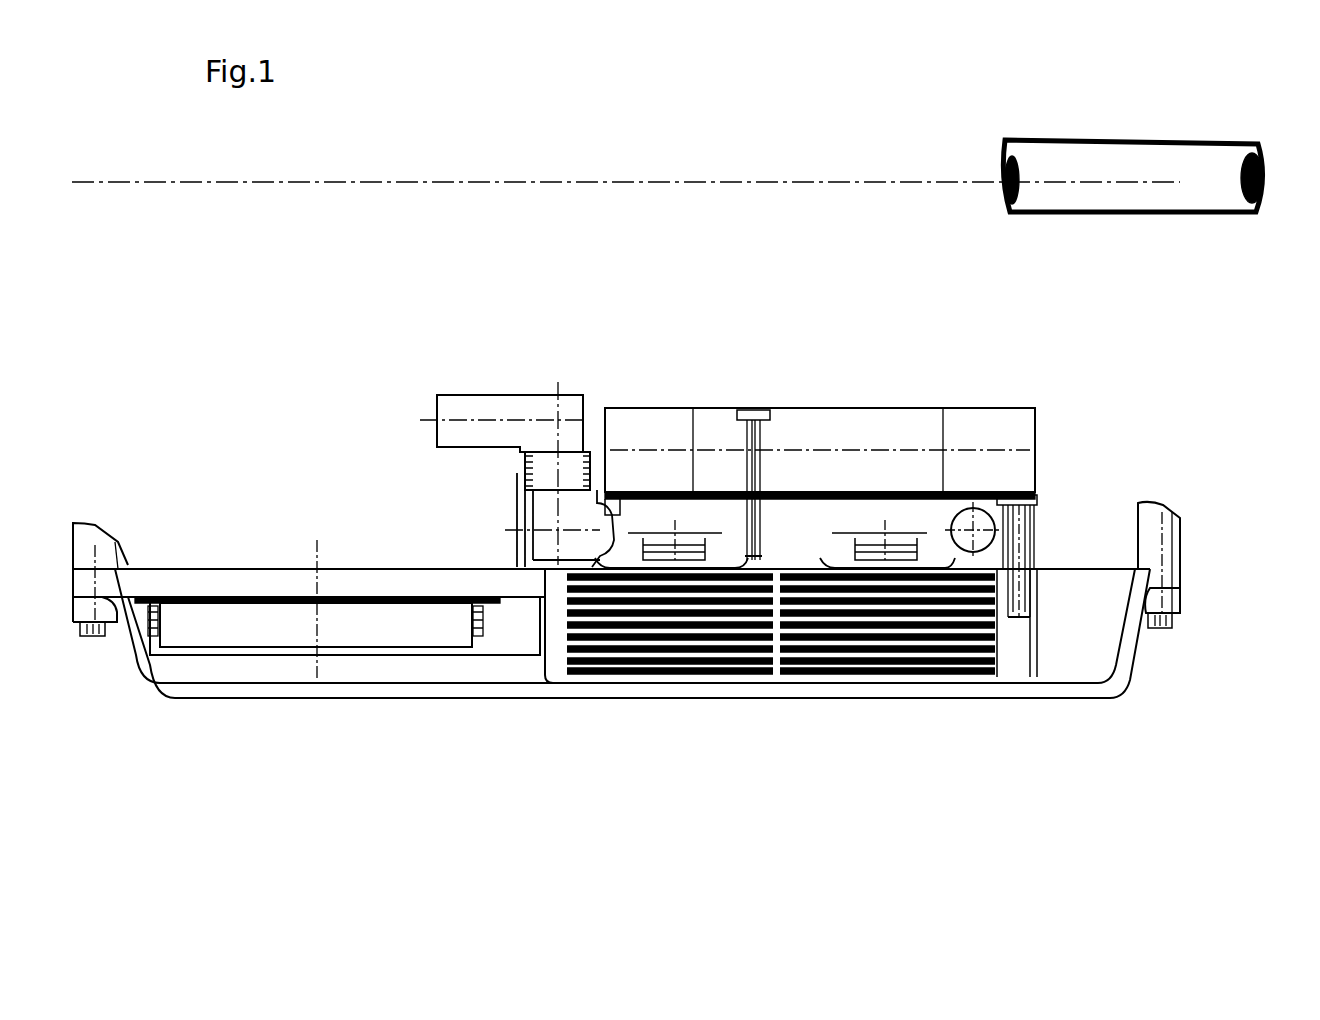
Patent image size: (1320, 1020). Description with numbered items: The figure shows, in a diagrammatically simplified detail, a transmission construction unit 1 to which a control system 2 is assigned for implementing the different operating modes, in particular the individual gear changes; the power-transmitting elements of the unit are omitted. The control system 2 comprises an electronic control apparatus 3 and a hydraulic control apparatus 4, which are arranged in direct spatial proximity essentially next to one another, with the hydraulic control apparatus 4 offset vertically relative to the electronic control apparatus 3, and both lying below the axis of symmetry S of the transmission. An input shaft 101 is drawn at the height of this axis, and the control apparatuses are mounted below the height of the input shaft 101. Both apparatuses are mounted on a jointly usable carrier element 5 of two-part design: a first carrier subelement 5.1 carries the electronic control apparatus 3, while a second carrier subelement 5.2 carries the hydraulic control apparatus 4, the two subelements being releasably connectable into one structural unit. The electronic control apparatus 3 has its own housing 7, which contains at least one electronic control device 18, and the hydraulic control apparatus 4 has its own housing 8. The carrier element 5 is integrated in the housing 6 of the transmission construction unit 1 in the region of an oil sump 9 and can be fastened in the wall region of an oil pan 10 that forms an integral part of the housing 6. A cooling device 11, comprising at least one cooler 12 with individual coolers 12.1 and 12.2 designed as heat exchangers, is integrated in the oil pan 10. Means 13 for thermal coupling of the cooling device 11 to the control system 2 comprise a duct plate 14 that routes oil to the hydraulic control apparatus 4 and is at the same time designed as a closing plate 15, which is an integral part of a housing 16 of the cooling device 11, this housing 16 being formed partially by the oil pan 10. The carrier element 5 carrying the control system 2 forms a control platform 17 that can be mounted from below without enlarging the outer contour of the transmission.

The transmission construction unit 1 is at (605, 327).
The control system 2 is at (457, 373).
The electronic control apparatus 3 is at (344, 600).
The hydraulic control apparatus 4 is at (750, 407).
The carrier element 5 is at (513, 605).
The first carrier subelement 5.1 is at (140, 615).
The second carrier subelement 5.2 is at (516, 472).
The housing 6 is at (370, 690).
The housing of the electronic control apparatus 7 is at (190, 600).
The housing of the hydraulic control apparatus 8 is at (895, 408).
The oil sump 9 is at (1128, 462).
The oil pan 10 is at (1030, 683).
The cooling device 11 is at (868, 698).
The cooler 12 is at (770, 669).
The first cooler 12.1 is at (605, 688).
The second cooler 12.2 is at (815, 688).
The means for thermal coupling 13 is at (1030, 525).
The duct plate 14 is at (820, 541).
The closing plate 15 is at (1035, 537).
The housing of the cooling device 16 is at (1035, 607).
The control platform 17 is at (490, 690).
The electronic control device 18 is at (275, 639).
The axis of symmetry S is at (848, 182).
The input shaft 101 is at (1168, 156).